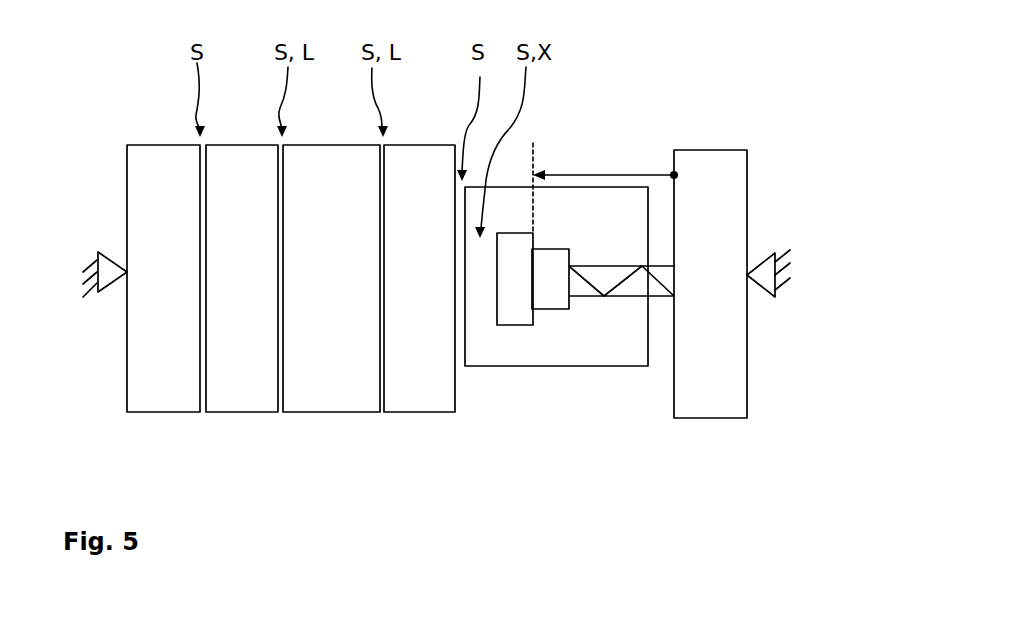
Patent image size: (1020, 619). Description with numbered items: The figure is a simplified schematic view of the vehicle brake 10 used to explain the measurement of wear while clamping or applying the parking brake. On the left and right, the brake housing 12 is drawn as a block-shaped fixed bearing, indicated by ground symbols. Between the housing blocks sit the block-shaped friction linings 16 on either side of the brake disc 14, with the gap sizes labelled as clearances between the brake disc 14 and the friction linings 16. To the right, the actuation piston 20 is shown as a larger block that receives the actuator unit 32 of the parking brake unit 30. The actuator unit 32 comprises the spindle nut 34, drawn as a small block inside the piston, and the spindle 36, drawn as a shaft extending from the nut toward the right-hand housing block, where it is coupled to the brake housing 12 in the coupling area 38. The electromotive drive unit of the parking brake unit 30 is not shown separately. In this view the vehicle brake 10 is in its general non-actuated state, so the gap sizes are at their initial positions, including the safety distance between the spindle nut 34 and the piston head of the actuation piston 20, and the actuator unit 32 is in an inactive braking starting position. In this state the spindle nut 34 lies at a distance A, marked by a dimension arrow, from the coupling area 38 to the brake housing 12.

The vehicle brake 10 is at (623, 100).
The brake housing 12 is at (147, 360).
The brake disc 14 is at (350, 360).
The friction linings 16 is at (232, 360).
The actuation piston 20 is at (578, 367).
The parking brake unit 30 is at (685, 100).
The actuator unit 32 is at (539, 333).
The spindle nut 34 is at (514, 298).
The spindle 36 is at (625, 280).
The coupling area 38 is at (668, 312).